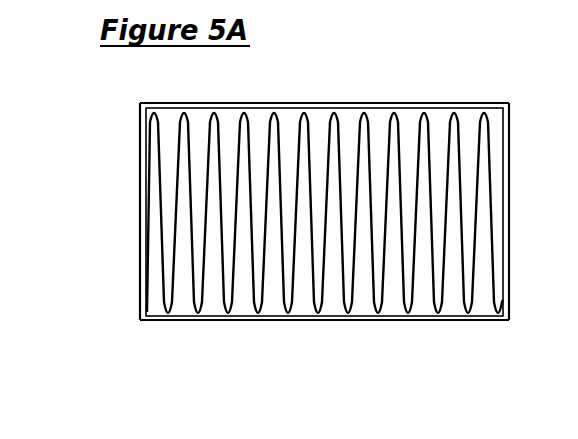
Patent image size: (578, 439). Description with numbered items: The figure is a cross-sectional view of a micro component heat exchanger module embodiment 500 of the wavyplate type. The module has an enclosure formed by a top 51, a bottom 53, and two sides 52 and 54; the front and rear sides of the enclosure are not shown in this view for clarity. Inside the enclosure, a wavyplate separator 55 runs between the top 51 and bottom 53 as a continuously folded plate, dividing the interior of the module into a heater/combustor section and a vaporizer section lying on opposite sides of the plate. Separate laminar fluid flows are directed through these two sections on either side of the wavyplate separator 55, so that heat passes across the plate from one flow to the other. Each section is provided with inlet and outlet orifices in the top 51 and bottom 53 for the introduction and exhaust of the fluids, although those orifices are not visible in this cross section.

The module embodiment 500 is at (509, 163).
The top 51 is at (428, 103).
The side 52 is at (509, 230).
The bottom 53 is at (322, 320).
The side 54 is at (140, 181).
The wavyplate separator 55 is at (398, 305).